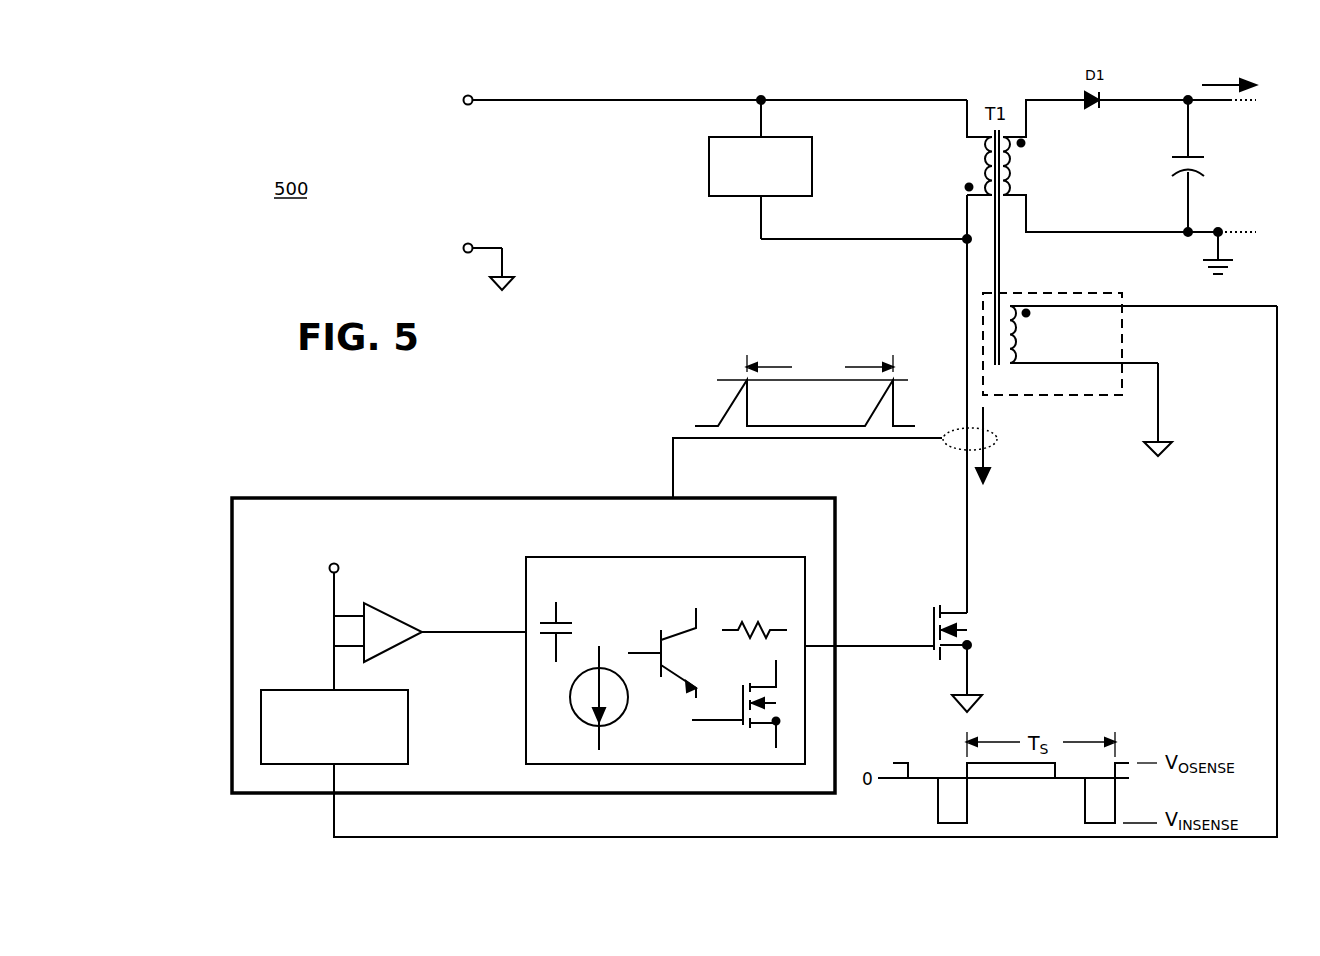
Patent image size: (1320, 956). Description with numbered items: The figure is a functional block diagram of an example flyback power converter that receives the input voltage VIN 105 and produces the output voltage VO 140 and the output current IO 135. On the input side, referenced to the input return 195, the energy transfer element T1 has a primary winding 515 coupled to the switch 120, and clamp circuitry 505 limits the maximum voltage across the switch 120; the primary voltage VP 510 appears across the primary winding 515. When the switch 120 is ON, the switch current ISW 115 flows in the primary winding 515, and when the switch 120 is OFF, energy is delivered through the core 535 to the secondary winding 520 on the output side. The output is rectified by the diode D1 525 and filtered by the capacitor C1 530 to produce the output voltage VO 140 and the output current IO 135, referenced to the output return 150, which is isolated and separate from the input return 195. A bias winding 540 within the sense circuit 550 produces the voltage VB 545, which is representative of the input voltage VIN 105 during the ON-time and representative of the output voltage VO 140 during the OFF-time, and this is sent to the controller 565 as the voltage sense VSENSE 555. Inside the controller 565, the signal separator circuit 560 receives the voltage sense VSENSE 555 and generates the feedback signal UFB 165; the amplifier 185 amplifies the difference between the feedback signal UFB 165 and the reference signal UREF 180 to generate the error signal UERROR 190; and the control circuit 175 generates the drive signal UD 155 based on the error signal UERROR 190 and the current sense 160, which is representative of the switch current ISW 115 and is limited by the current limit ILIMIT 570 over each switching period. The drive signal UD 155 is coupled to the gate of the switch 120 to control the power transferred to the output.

The input voltage VIN 105 is at (488, 180).
The input return 195 is at (516, 266).
The clamp circuitry 505 is at (706, 173).
The primary voltage VP 510 is at (890, 151).
The primary winding 515 is at (968, 170).
The secondary winding 520 is at (1020, 171).
The diode D1 525 is at (1095, 117).
The capacitor C1 530 is at (1183, 148).
The energy transfer element core T1 535 is at (1003, 264).
The bias winding 540 is at (1026, 340).
The voltage VB 545 is at (1177, 342).
The sense circuit 550 is at (1062, 398).
The voltage sense VSENSE 555 is at (1268, 537).
The signal separator circuit 560 is at (414, 727).
The controller 565 is at (421, 494).
The current limit waveform ILIMIT 570 is at (738, 378).
The current sense 160 is at (667, 462).
The control circuit 175 is at (716, 554).
The reference signal UREF 180 is at (343, 598).
The amplifier 185 is at (392, 652).
The error signal UERROR 190 is at (452, 640).
The feedback signal UFB 165 is at (330, 652).
The switch current ISW 115 is at (988, 458).
The switch 120 is at (971, 620).
The drive signal UD 155 is at (882, 650).
The output current IO 135 is at (1213, 73).
The output voltage VO 140 is at (1227, 156).
The output return 150 is at (1232, 272).